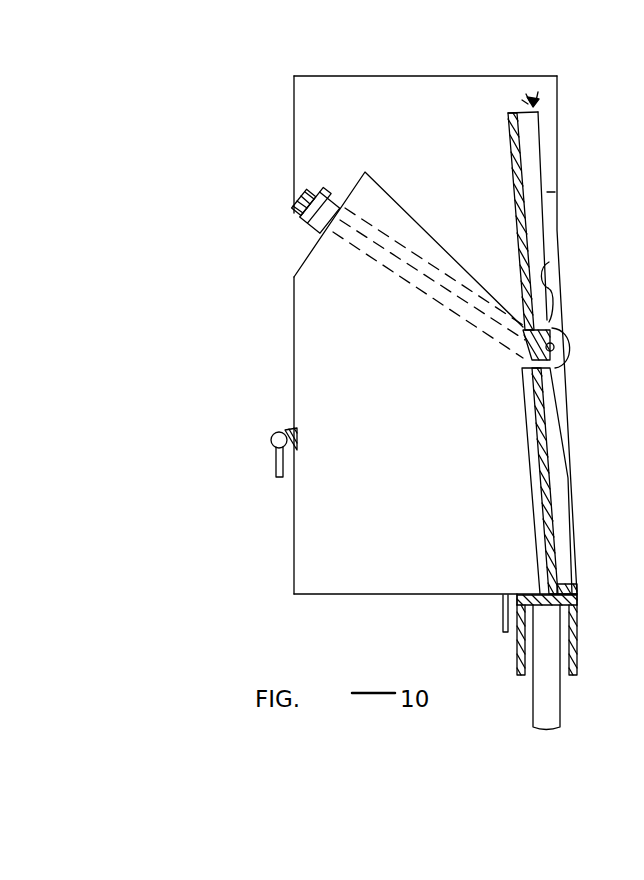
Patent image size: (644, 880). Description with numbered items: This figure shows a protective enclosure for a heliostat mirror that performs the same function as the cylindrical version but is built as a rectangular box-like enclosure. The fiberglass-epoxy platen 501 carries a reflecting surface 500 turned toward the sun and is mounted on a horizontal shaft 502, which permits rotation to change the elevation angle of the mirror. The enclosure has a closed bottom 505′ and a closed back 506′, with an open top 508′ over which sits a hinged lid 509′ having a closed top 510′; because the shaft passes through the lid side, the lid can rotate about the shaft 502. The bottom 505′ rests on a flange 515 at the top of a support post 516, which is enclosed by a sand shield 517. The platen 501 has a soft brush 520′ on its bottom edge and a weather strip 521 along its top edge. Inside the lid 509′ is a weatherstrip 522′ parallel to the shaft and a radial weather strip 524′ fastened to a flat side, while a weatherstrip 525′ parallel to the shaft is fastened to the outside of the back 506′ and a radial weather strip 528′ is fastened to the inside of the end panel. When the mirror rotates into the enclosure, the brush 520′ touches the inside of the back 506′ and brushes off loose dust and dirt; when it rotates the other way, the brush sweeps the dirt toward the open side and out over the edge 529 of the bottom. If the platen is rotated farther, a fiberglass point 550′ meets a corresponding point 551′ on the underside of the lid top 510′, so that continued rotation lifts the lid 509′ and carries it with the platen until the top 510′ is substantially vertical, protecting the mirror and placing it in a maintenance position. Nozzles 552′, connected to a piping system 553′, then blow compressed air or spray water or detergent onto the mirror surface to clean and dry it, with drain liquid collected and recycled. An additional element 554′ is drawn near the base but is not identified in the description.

The reflecting surface 500 is at (510, 152).
The platen 501 is at (548, 190).
The horizontal shaft 502 is at (560, 352).
The closed bottom 505′ is at (428, 595).
The closed back 506′ is at (294, 552).
The open top 508′ is at (441, 246).
The hinged lid 509′ is at (480, 76).
The closed top of lid 510′ is at (558, 129).
The flange 515 is at (578, 604).
The support post 516 is at (555, 701).
The sand shield 517 is at (578, 643).
The soft brush 520′ is at (533, 104).
The weather strip 521 is at (580, 590).
The weatherstrip 522′ is at (296, 208).
The radial weather strip 524′ is at (312, 229).
The weatherstrip 525′ is at (335, 191).
The radial weather strip 528′ is at (537, 482).
The edge of the bottom 529 is at (578, 598).
The fiberglass point 550′ is at (551, 300).
The corresponding point 551′ is at (548, 272).
The nozzles 552′ is at (297, 437).
The piping system 553′ is at (277, 463).
The tab 554′ is at (503, 620).